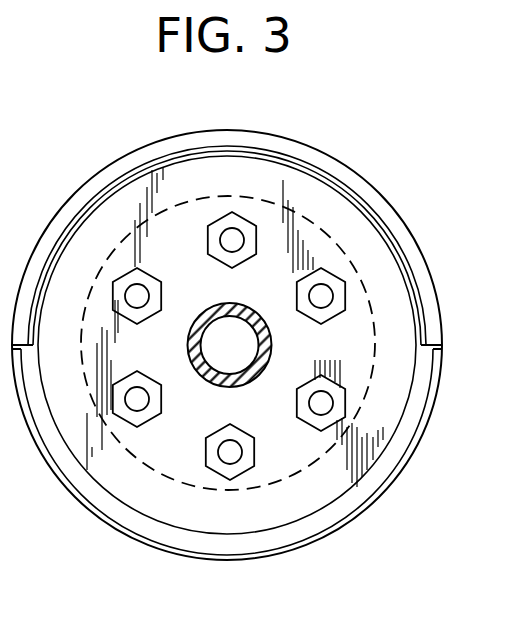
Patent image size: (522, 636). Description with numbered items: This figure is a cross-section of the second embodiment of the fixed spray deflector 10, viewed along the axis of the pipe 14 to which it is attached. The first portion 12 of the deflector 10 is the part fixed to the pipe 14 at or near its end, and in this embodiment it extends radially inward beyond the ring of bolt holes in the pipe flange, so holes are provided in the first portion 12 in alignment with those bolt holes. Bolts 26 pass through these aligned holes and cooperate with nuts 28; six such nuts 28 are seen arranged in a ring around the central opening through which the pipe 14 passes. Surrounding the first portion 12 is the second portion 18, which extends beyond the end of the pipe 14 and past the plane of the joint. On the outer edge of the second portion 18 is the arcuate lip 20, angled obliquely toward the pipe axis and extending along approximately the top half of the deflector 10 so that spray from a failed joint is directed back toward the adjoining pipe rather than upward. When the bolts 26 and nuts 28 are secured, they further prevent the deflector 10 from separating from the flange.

The fixed spray deflector 10 is at (390, 200).
The first portion 12 is at (397, 390).
The pipe 14 is at (223, 303).
The second portion 18 is at (413, 450).
The lip 20 is at (163, 148).
The bolts 26 is at (143, 398).
The nuts 28 is at (246, 228).